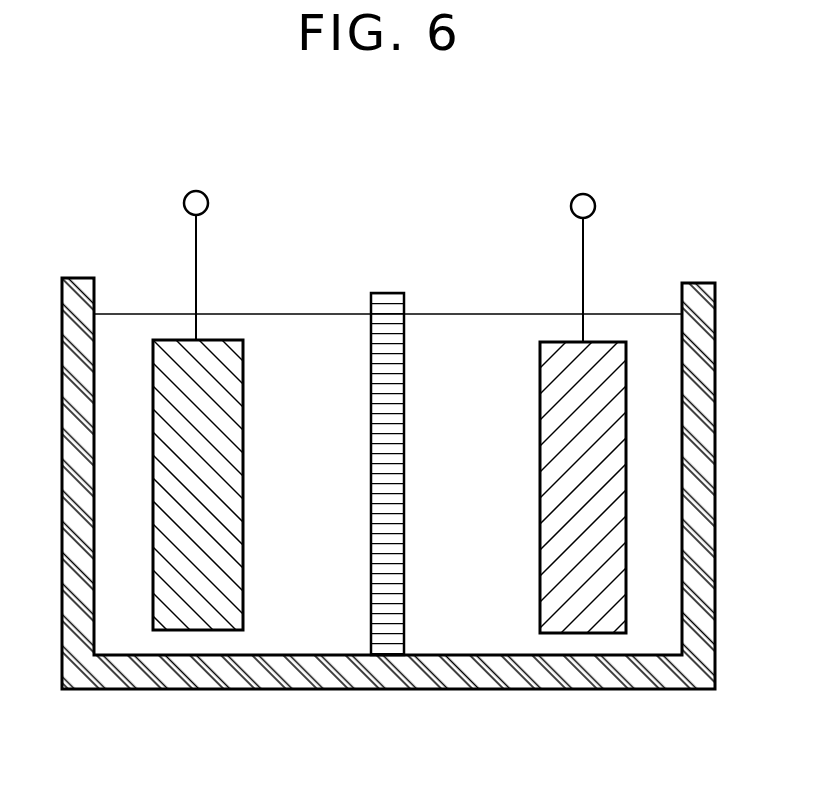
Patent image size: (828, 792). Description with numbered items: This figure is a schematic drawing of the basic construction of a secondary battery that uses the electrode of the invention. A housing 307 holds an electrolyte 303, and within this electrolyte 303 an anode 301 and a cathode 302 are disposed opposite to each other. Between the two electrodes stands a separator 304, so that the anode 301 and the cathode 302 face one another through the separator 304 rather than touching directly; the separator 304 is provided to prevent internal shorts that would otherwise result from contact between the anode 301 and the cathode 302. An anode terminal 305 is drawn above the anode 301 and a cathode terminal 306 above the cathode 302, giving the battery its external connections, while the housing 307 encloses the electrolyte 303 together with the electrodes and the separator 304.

The anode 301 is at (213, 618).
The cathode 302 is at (593, 620).
The electrolyte 303 is at (475, 633).
The separator 304 is at (387, 292).
The anode terminal 305 is at (202, 192).
The cathode terminal 306 is at (590, 195).
The housing 307 is at (113, 680).